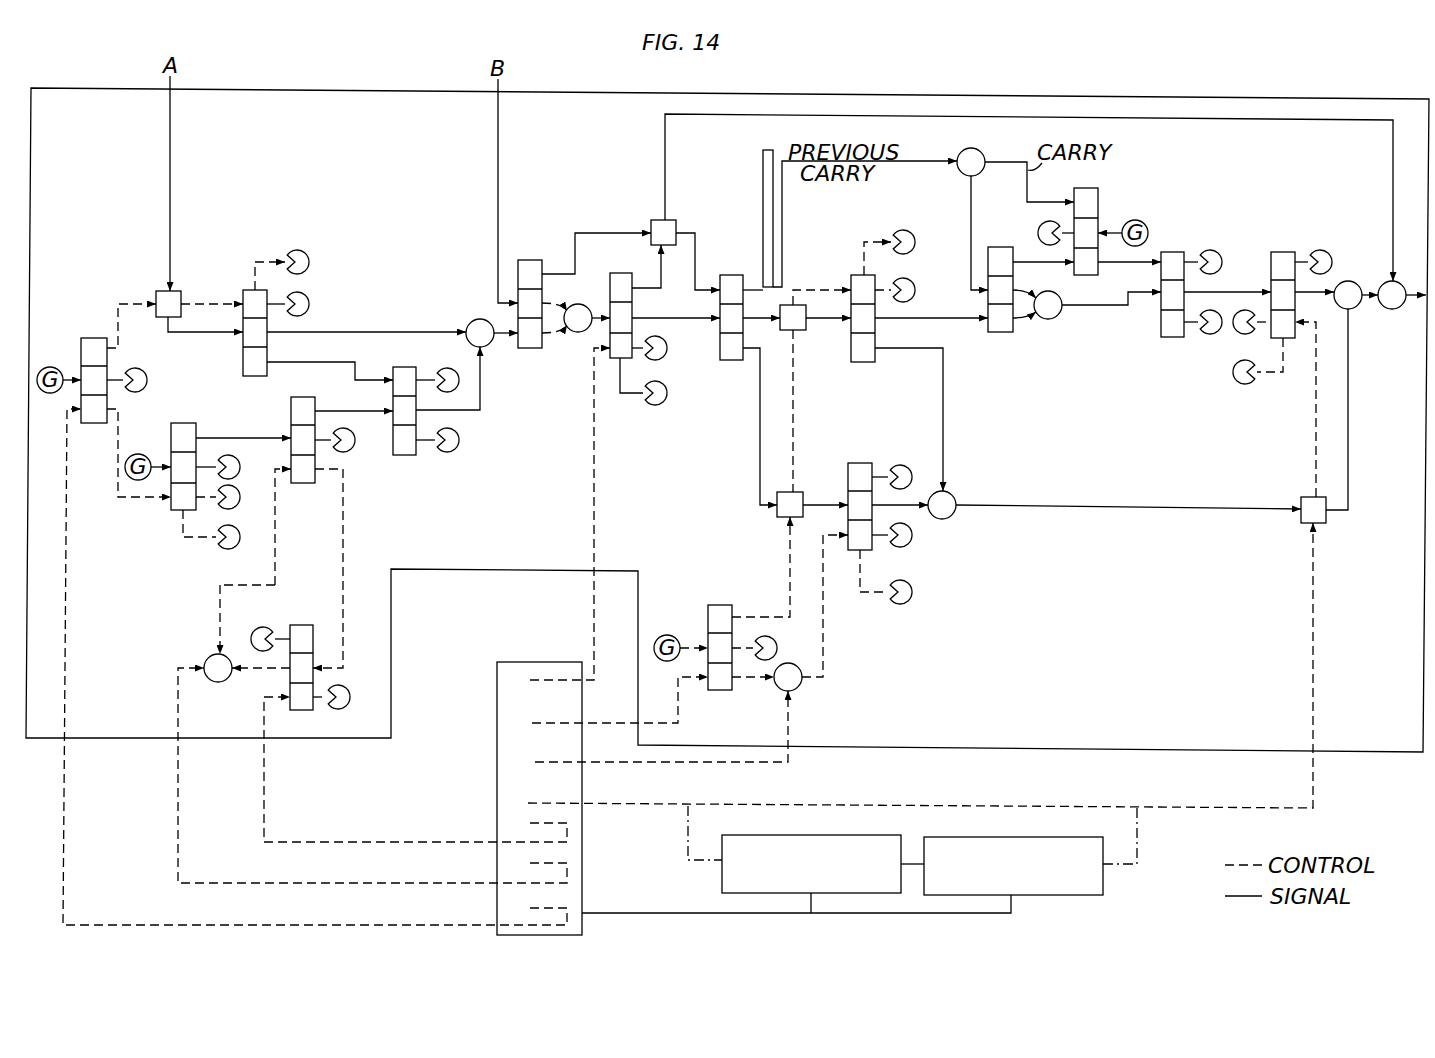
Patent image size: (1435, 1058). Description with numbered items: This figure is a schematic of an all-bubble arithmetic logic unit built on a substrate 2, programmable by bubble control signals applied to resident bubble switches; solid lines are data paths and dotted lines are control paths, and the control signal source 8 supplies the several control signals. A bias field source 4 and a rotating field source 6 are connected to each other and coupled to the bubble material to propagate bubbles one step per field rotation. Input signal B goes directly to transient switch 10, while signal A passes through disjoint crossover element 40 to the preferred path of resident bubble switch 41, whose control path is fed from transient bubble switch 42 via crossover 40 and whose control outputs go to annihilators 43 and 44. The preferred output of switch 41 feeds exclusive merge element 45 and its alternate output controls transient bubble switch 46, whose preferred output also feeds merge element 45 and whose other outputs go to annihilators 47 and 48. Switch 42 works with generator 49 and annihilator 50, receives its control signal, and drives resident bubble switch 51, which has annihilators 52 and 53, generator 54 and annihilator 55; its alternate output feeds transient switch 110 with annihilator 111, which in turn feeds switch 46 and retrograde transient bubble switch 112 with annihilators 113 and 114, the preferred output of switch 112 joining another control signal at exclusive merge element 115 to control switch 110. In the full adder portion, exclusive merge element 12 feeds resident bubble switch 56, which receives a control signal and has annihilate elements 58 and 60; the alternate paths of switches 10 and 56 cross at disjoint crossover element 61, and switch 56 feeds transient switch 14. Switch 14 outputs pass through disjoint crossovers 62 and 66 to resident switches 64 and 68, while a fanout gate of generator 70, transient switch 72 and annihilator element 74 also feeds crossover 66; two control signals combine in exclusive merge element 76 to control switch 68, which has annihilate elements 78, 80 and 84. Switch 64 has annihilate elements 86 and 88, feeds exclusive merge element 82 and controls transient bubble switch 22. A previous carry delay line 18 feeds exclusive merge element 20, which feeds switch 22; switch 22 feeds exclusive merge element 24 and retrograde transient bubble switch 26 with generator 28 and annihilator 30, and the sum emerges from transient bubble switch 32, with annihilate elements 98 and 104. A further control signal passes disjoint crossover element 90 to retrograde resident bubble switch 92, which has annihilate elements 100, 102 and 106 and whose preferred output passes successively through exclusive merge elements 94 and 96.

The substrate 2 is at (1242, 99).
The bias field source 4 is at (722, 884).
The rotating field source 6 is at (1072, 895).
The control signal source 8 is at (582, 856).
The transient switch 10 is at (530, 348).
The exclusive merge element 12 is at (580, 304).
The transient switch 14 is at (731, 275).
The previous carry delay line 18 is at (763, 205).
The exclusive merge element 20 is at (958, 172).
The transient bubble switch 22 is at (1003, 332).
The exclusive merge element 24 is at (1054, 318).
The retrograde transient bubble switch 26 is at (1098, 196).
The generator 28 is at (1142, 221).
The annihilator 30 is at (1040, 230).
The transient bubble switch 32 is at (1176, 252).
The disjoint crossover element 40 is at (178, 291).
The resident bubble switch 41 is at (243, 350).
The transient bubble switch 42 is at (100, 338).
The annihilator 43 is at (306, 258).
The annihilator 44 is at (306, 300).
The exclusive merge element 45 is at (468, 322).
The transient bubble switch 46 is at (400, 367).
The annihilator 47 is at (442, 368).
The annihilator 48 is at (459, 446).
The generator 49 is at (50, 367).
The annihilator 50 is at (147, 381).
The resident bubble switch 51 is at (196, 428).
The annihilator 52 is at (242, 503).
The annihilator 53 is at (238, 545).
The generator 54 is at (138, 454).
The annihilator 55 is at (240, 468).
The resident bubble switch 56 is at (614, 273).
The annihilate element 58 is at (667, 348).
The annihilate element 60 is at (667, 394).
The disjoint crossover element 61 is at (672, 220).
The disjoint crossover 62 is at (806, 330).
The resident switch 64 is at (864, 362).
The disjoint crossover element 66 is at (777, 516).
The resident bubble switch 68 is at (860, 463).
The generator 70 is at (667, 635).
The transient switch 72 is at (716, 605).
The annihilator element 74 is at (777, 648).
The exclusive merge element 76 is at (798, 687).
The annihilate element 78 is at (912, 538).
The annihilate element 80 is at (912, 592).
The exclusive merge element 82 is at (953, 494).
The annihilate element 84 is at (910, 468).
The annihilate element 86 is at (915, 291).
The annihilate element 88 is at (912, 240).
The disjoint crossover element 90 is at (1304, 523).
The retrograde resident bubble switch 92 is at (1284, 252).
The exclusive merge element 94 is at (1352, 282).
The exclusive merge element 96 is at (1393, 310).
The annihilate element 98 is at (1204, 334).
The annihilate element 100 is at (1238, 334).
The annihilate element 102 is at (1240, 384).
The annihilate element 104 is at (1220, 256).
The annihilate element 106 is at (1330, 256).
The transient switch 110 is at (303, 397).
The annihilator 111 is at (352, 450).
The retrograde transient bubble switch 112 is at (302, 625).
The annihilator 113 is at (266, 628).
The annihilator 114 is at (346, 686).
The exclusive merge element 115 is at (218, 682).